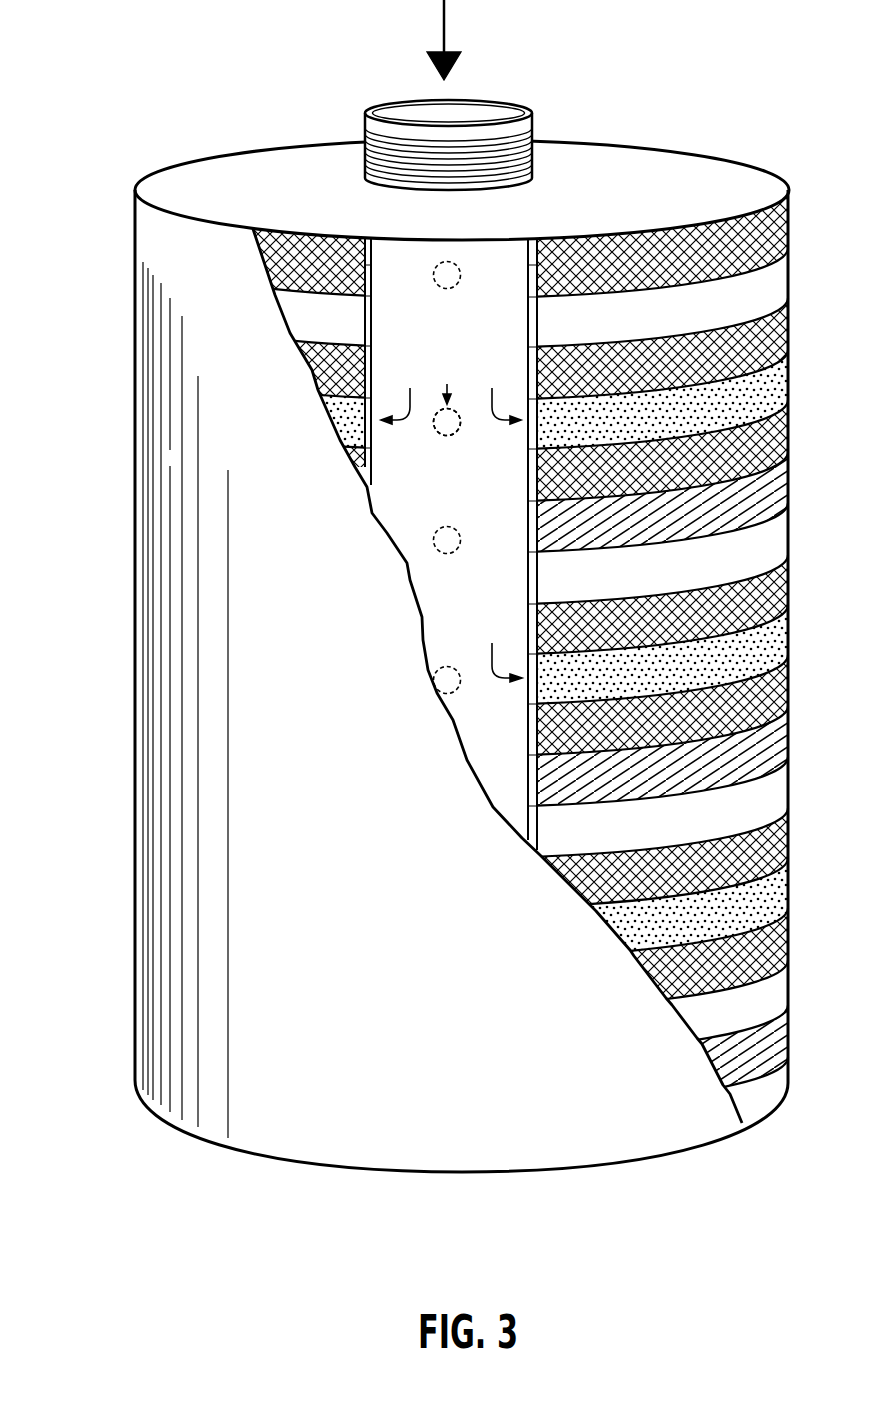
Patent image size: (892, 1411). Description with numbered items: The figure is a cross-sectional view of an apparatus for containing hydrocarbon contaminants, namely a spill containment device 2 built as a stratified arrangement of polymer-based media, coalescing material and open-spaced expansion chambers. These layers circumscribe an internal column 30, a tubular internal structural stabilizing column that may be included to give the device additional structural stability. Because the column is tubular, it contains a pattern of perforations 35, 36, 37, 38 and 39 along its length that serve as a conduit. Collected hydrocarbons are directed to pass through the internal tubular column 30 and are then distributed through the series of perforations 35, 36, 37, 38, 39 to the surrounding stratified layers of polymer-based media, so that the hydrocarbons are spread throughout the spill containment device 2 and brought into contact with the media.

The spill containment device 2 is at (364, 798).
The internal column 30 is at (362, 322).
The perforation 35 is at (527, 407).
The perforation 36 is at (445, 434).
The perforation 37 is at (532, 667).
The perforation 38 is at (447, 527).
The perforation 39 is at (530, 558).